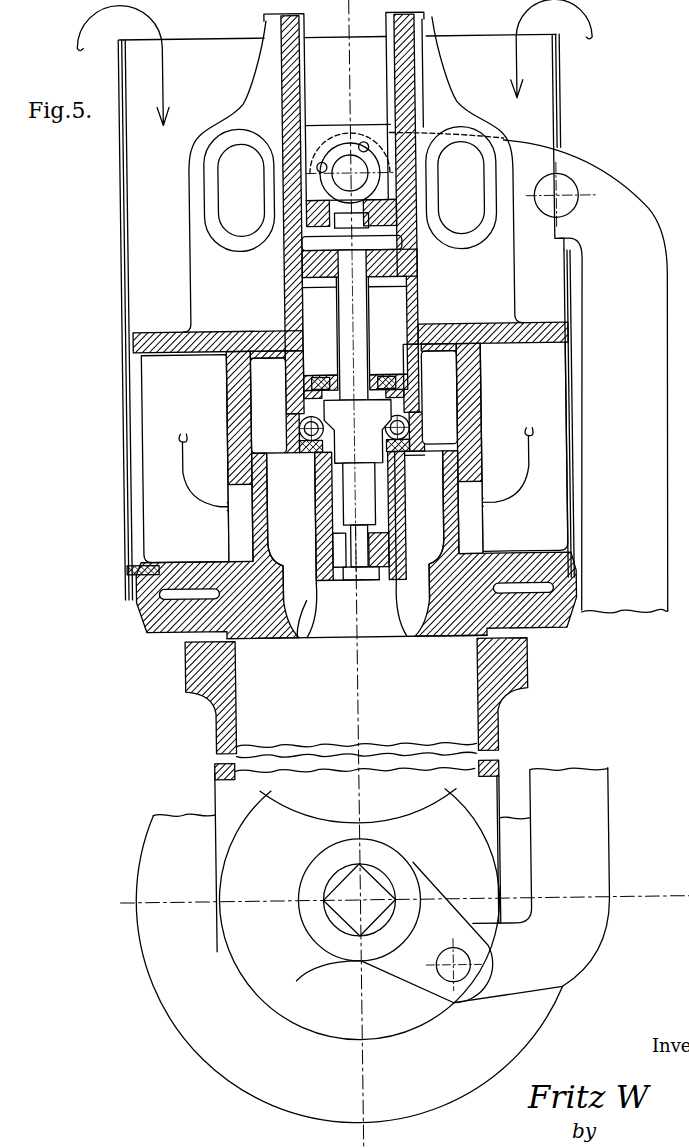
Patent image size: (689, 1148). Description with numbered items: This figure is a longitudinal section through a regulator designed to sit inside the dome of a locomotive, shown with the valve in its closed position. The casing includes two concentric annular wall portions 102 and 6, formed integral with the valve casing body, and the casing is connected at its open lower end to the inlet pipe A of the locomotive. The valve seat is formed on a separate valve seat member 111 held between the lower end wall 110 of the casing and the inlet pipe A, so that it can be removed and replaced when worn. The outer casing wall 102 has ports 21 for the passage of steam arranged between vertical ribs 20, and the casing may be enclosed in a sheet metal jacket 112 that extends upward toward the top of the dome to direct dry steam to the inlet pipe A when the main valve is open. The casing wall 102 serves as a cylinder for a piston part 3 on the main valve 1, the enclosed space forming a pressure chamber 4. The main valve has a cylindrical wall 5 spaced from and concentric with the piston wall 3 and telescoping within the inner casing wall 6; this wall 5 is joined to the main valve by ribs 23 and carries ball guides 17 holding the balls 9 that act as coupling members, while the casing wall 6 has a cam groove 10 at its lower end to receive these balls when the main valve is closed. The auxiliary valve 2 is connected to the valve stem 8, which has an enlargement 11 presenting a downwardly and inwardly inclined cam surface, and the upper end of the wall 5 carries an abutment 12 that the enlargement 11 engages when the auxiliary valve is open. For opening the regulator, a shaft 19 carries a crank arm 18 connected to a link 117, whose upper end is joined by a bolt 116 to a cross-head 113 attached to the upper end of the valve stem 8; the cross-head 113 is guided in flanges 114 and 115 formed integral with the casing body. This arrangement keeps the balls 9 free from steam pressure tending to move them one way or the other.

The main valve 1 is at (310, 640).
The auxiliary valve 2 is at (362, 620).
The piston part 3 is at (455, 519).
The pressure chamber 4 is at (268, 405).
The cylindrical wall 5 is at (400, 500).
The annular wall portion 6 is at (297, 331).
The valve stem 8 is at (366, 330).
The balls 9 is at (410, 428).
The cam groove 10 is at (404, 455).
The enlargement 11 is at (358, 489).
The abutment 12 is at (374, 375).
The ball guides 17 is at (296, 447).
The crank arm 18 is at (394, 933).
The shaft 19 is at (360, 900).
The vertical ribs 20 is at (354, 452).
The ports 21 is at (236, 532).
The ribs 23 is at (356, 526).
The annular wall portion 102 is at (236, 472).
The lower end wall 110 is at (150, 578).
The valve seat member 111 is at (168, 610).
The sheet metal jacket 112 is at (125, 560).
The cross-head 113 is at (352, 132).
The flange 114 is at (298, 95).
The flange 115 is at (403, 101).
The bolt 116 is at (350, 176).
The link 117 is at (588, 376).
The inlet pipe A is at (222, 708).